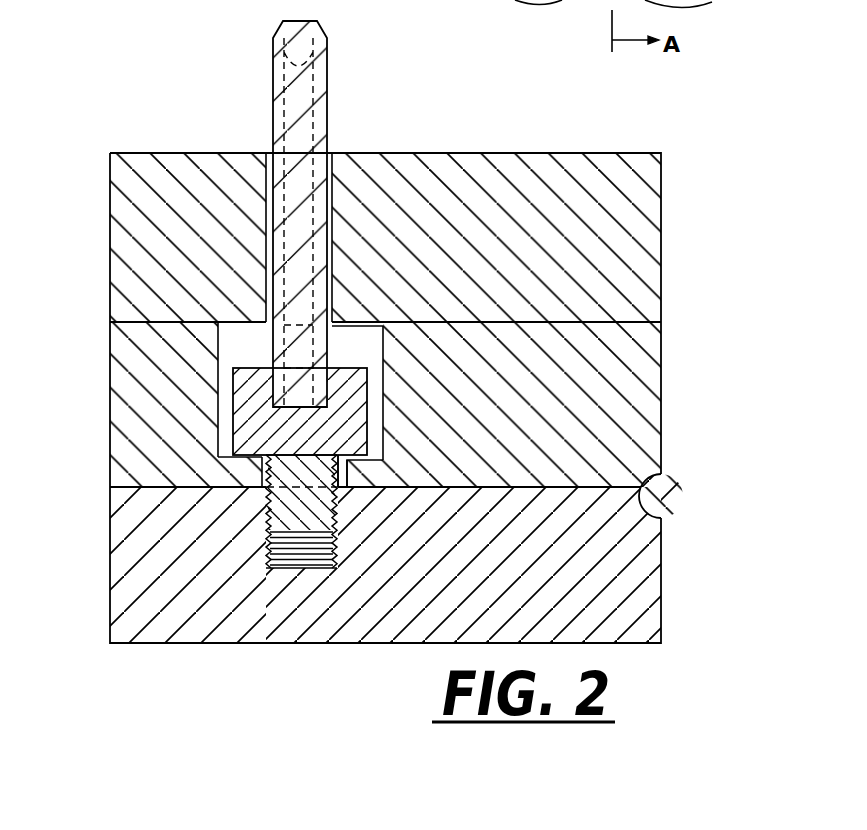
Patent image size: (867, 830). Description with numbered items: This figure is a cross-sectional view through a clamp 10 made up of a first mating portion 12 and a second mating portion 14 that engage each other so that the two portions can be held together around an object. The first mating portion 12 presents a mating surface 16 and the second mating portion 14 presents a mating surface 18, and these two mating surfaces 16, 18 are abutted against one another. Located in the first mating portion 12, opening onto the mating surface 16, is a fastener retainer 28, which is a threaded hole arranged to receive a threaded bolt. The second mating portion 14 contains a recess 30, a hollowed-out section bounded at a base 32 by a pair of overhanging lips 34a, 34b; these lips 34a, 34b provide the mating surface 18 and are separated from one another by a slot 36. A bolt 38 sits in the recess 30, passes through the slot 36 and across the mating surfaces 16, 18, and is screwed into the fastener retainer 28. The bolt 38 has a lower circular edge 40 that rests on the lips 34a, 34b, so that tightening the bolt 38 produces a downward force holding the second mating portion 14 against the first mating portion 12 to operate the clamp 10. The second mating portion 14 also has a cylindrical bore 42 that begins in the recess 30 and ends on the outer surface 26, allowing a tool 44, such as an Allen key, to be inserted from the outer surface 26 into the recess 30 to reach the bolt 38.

The clamp 10 is at (694, 346).
The first mating portion 12 is at (662, 582).
The second mating portion 14 is at (662, 448).
The mating surface 16 is at (645, 517).
The mating surface 18 is at (640, 473).
The outer surface 26 is at (405, 153).
The fastener retainer 28 is at (282, 567).
The recess 30 is at (235, 343).
The base 32 is at (227, 440).
The lip 34a is at (253, 470).
The lip 34b is at (361, 480).
The slot 36 is at (250, 489).
The bolt 38 is at (252, 402).
The lower circular edge 40 is at (353, 466).
The cylindrical bore 42 is at (264, 182).
The tool 44 is at (328, 107).